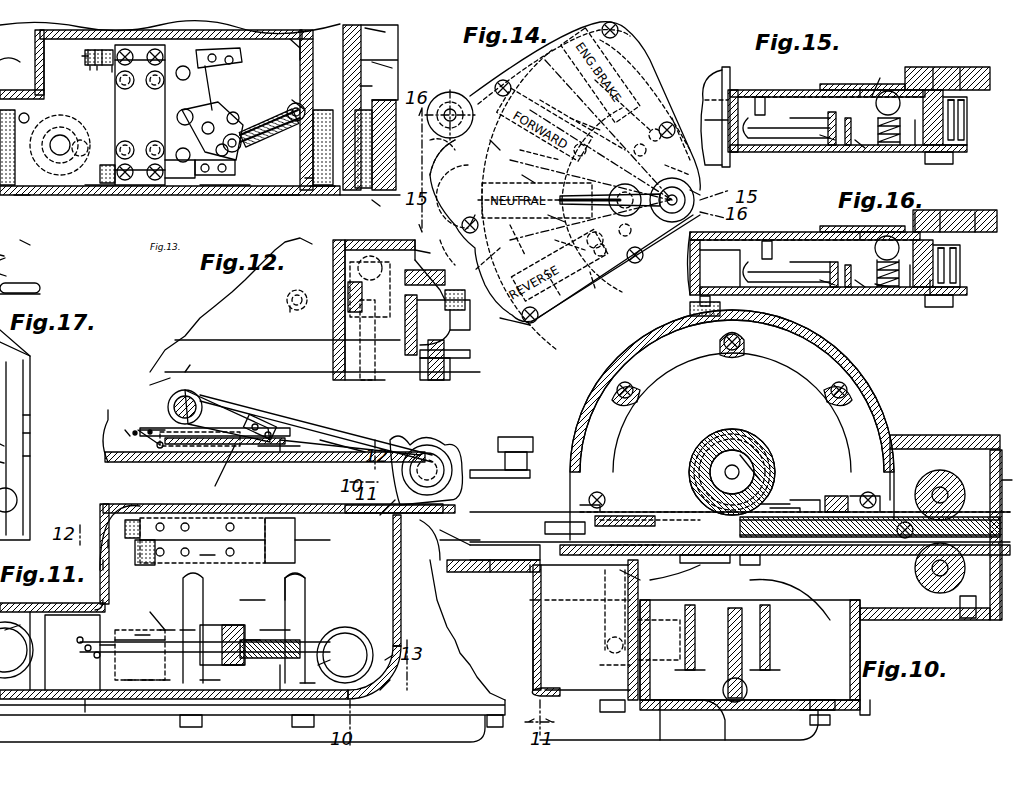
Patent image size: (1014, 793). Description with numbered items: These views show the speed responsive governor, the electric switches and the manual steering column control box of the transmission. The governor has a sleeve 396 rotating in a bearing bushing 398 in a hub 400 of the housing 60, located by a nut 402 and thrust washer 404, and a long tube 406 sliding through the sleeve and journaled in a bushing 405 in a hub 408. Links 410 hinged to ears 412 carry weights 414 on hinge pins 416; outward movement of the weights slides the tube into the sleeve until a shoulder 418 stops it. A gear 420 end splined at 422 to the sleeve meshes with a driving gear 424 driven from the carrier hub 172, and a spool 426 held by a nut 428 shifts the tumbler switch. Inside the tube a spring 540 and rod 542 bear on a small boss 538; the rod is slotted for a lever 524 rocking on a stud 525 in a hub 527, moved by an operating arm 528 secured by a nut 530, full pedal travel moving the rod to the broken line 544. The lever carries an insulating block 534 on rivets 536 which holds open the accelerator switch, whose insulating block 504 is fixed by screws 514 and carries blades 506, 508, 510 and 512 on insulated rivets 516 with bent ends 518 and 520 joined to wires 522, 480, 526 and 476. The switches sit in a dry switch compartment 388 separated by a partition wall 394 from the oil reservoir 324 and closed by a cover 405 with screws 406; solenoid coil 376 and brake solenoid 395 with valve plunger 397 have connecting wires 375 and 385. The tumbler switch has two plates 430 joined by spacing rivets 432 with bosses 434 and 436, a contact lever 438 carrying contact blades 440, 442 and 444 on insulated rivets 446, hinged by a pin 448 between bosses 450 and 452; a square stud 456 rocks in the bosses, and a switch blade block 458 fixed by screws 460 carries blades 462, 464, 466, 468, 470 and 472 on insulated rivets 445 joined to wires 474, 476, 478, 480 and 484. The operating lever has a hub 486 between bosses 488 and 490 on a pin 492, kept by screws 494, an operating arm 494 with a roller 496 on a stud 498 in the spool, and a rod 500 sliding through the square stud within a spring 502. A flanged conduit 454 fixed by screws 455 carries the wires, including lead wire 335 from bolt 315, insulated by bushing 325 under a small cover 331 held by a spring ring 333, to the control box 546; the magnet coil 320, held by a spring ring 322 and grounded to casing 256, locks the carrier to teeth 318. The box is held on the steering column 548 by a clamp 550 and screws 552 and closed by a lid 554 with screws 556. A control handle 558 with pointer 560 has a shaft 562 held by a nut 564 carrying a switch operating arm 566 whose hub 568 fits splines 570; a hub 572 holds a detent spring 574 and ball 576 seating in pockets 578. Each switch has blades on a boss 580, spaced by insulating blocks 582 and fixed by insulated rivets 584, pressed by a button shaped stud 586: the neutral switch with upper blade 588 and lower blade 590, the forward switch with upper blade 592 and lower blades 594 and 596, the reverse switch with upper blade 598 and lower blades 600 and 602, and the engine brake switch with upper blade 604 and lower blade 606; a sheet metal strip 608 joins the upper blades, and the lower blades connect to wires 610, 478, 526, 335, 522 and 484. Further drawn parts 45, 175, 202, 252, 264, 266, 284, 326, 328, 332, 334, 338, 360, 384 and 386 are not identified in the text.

In FIG. 10, the shaft 45 is at (775, 470).
In FIG. 10, the housing wall 60 is at (880, 405).
In FIG. 10, the hub 172 is at (730, 435).
In FIG. 10, the shaft bore 175 is at (748, 450).
In FIG. 10, the housing flange 202 is at (860, 366).
In FIG. 12, the bracket 252 is at (430, 285).
In FIG. 14, the plate edge 256 is at (530, 325).
In FIG. 10, the bearing 264 is at (745, 578).
In FIG. 10, the bearing race 266 is at (745, 565).
In FIG. 10, the hub ring 284 is at (712, 445).
In FIG. 12, the clamp 315 is at (448, 362).
In FIG. 12, the bushing 318 is at (455, 305).
In FIG. 12, the cap 320 is at (447, 295).
In FIG. 12, the link 322 is at (460, 312).
In FIG. 10, the housing wall 324 is at (830, 655).
In FIG. 12, the plate 325 is at (470, 345).
In FIG. 10, the flange 326 is at (835, 712).
In FIG. 10, the bolt 328 is at (838, 725).
In FIG. 12, the boss 331 is at (430, 460).
In FIG. 10, the bottom wall 332 is at (735, 705).
In FIG. 12, the bore 333 is at (425, 445).
In FIG. 13, the housing 334 is at (385, 30).
In FIG. 10, the housing 334 is at (770, 635).
In FIG. 12, the pin 335 is at (385, 400).
In FIG. 14, the pin 335 is at (558, 240).
In FIG. 10, the pin 338 is at (745, 680).
In FIG. 13, the casing 360 is at (17, 57).
In FIG. 13, the pin 375 is at (30, 112).
In FIG. 11, the wall 376 is at (20, 619).
In FIG. 13, the wall 384 is at (20, 195).
In FIG. 13, the bore 385 is at (312, 182).
In FIG. 11, the bore 385 is at (335, 669).
In FIG. 13, the wall 386 is at (378, 81).
In FIG. 13, the housing 388 is at (278, 186).
In FIG. 12, the housing 388 is at (150, 385).
In FIG. 11, the housing 388 is at (394, 676).
In FIG. 10, the housing 388 is at (575, 693).
In FIG. 13, the wall 394 is at (306, 41).
In FIG. 10, the wall 394 is at (659, 640).
In FIG. 13, the wall 395 is at (320, 195).
In FIG. 11, the wall 395 is at (385, 670).
In FIG. 10, the wall 395 is at (540, 668).
In FIG. 10, the spacer 396 is at (860, 495).
In FIG. 13, the wall 397 is at (392, 68).
In FIG. 10, the washer 398 is at (835, 512).
In FIG. 10, the collar 400 is at (822, 512).
In FIG. 10, the sleeve 402 is at (790, 512).
In FIG. 10, the ring 404 is at (808, 512).
In FIG. 13, the cover 405 is at (225, 190).
In FIG. 12, the cover 405 is at (201, 361).
In FIG. 10, the cover 405 is at (665, 512).
In FIG. 13, the bolt 406 is at (380, 208).
In FIG. 10, the bolt 406 is at (883, 560).
In FIG. 10, the shaft 408 is at (672, 512).
In FIG. 10, the gear 410 is at (940, 478).
In FIG. 10, the housing 412 is at (920, 480).
In FIG. 17, the flange 414 is at (18, 500).
In FIG. 10, the flange 414 is at (935, 590).
In FIG. 10, the bolt 416 is at (960, 605).
In FIG. 10, the gear 418 is at (930, 570).
In FIG. 10, the bearing 420 is at (715, 570).
In FIG. 10, the shaft 422 is at (800, 520).
In FIG. 10, the hub 424 is at (768, 460).
In FIG. 12, the bracket 426 is at (340, 308).
In FIG. 10, the bracket 426 is at (630, 515).
In FIG. 10, the bolt 428 is at (605, 510).
In FIG. 13, the link 430 is at (229, 126).
In FIG. 11, the link 430 is at (245, 625).
In FIG. 13, the pin 432 is at (242, 128).
In FIG. 11, the pin 432 is at (255, 640).
In FIG. 13, the hole 434 is at (182, 114).
In FIG. 11, the hole 434 is at (235, 625).
In FIG. 13, the pin 436 is at (233, 116).
In FIG. 11, the pin 436 is at (275, 630).
In FIG. 13, the arm 438 is at (210, 80).
In FIG. 11, the arm 438 is at (230, 670).
In FIG. 13, the plate 440 is at (230, 178).
In FIG. 11, the plate 440 is at (210, 680).
In FIG. 13, the plate 442 is at (230, 55).
In FIG. 13, the screw 444 is at (215, 58).
In FIG. 11, the screw 444 is at (250, 600).
In FIG. 13, the bolt 445 is at (127, 190).
In FIG. 13, the screw 446 is at (229, 62).
In FIG. 13, the hole 448 is at (182, 128).
In FIG. 11, the hole 448 is at (205, 555).
In FIG. 11, the block 450 is at (205, 630).
In FIG. 11, the bolt 452 is at (190, 725).
In FIG. 13, the gear 454 is at (70, 144).
In FIG. 14, the gear 454 is at (445, 105).
In FIG. 10, the gear 454 is at (700, 318).
In FIG. 13, the gear 455 is at (70, 158).
In FIG. 11, the gear 455 is at (60, 712).
In FIG. 13, the pin 456 is at (235, 145).
In FIG. 11, the pin 456 is at (240, 660).
In FIG. 13, the bolt 458 is at (135, 185).
In FIG. 13, the plate 460 is at (140, 115).
In FIG. 13, the coil 462 is at (110, 185).
In FIG. 11, the coil 462 is at (165, 680).
In FIG. 13, the rod 464 is at (85, 190).
In FIG. 17, the rod 464 is at (12, 461).
In FIG. 11, the rod 464 is at (145, 680).
In FIG. 13, the coil 466 is at (110, 50).
In FIG. 11, the coil 466 is at (142, 628).
In FIG. 13, the wire 468 is at (104, 50).
In FIG. 11, the wire 468 is at (114, 625).
In FIG. 13, the wire 470 is at (96, 50).
In FIG. 11, the wire 470 is at (160, 635).
In FIG. 13, the wire 472 is at (90, 50).
In FIG. 11, the wire 472 is at (140, 635).
In FIG. 13, the nut 474 is at (108, 150).
In FIG. 17, the nut 474 is at (12, 444).
In FIG. 11, the nut 474 is at (85, 648).
In FIG. 13, the nut 476 is at (112, 135).
In FIG. 17, the nut 476 is at (30, 435).
In FIG. 11, the nut 476 is at (105, 665).
In FIG. 13, the wire 478 is at (112, 70).
In FIG. 17, the wire 478 is at (30, 415).
In FIG. 11, the wire 478 is at (90, 712).
In FIG. 14, the wire 478 is at (684, 132).
In FIG. 16, the wire 478 is at (858, 295).
In FIG. 13, the wire 480 is at (97, 68).
In FIG. 17, the wire 480 is at (30, 456).
In FIG. 12, the wire 480 is at (150, 430).
In FIG. 11, the wire 480 is at (182, 632).
In FIG. 13, the terminal 484 is at (88, 56).
In FIG. 11, the terminal 484 is at (78, 638).
In FIG. 14, the terminal 484 is at (670, 120).
In FIG. 13, the bolt 486 is at (309, 52).
In FIG. 11, the bolt 486 is at (290, 672).
In FIG. 10, the bolt 486 is at (610, 660).
In FIG. 12, the post 488 is at (290, 310).
In FIG. 11, the post 488 is at (290, 600).
In FIG. 11, the bolt 490 is at (295, 725).
In FIG. 13, the post 492 is at (298, 105).
In FIG. 12, the post 492 is at (292, 300).
In FIG. 11, the post 492 is at (298, 588).
In FIG. 10, the post 492 is at (605, 595).
In FIG. 12, the post 494 is at (350, 268).
In FIG. 11, the post 494 is at (310, 640).
In FIG. 10, the post 494 is at (615, 578).
In FIG. 12, the bracket 496 is at (430, 253).
In FIG. 10, the bracket 496 is at (625, 560).
In FIG. 14, the tab 498 is at (440, 245).
In FIG. 10, the tab 498 is at (626, 563).
In FIG. 13, the spring 500 is at (269, 130).
In FIG. 11, the spring 500 is at (345, 654).
In FIG. 10, the spring 500 is at (605, 645).
In FIG. 13, the nut 502 is at (300, 118).
In FIG. 11, the nut 502 is at (345, 655).
In FIG. 12, the lever 504 is at (205, 445).
In FIG. 12, the pivot 506 is at (160, 445).
In FIG. 11, the pivot 506 is at (141, 527).
In FIG. 12, the pin 508 is at (158, 448).
In FIG. 11, the pin 508 is at (165, 632).
In FIG. 12, the pin 510 is at (148, 440).
In FIG. 12, the pin 512 is at (135, 435).
In FIG. 12, the arm 514 is at (220, 472).
In FIG. 12, the lever 516 is at (175, 433).
In FIG. 11, the lever 516 is at (202, 540).
In FIG. 10, the lever 516 is at (470, 560).
In FIG. 12, the pin 518 is at (285, 455).
In FIG. 12, the arm 520 is at (265, 450).
In FIG. 12, the lever 522 is at (200, 398).
In FIG. 11, the lever 522 is at (190, 555).
In FIG. 14, the lever 522 is at (615, 268).
In FIG. 12, the rod 524 is at (290, 440).
In FIG. 11, the rod 524 is at (312, 550).
In FIG. 10, the rod 524 is at (490, 542).
In FIG. 12, the rod 525 is at (316, 428).
In FIG. 10, the rod 525 is at (520, 465).
In FIG. 17, the shift rod 526 is at (15, 334).
In FIG. 12, the shift rod 526 is at (130, 435).
In FIG. 11, the shift rod 526 is at (105, 565).
In FIG. 14, the shift rod 526 is at (600, 200).
In FIG. 12, the link 527 is at (200, 405).
In FIG. 10, the link 527 is at (520, 522).
In FIG. 10, the nut 528 is at (525, 472).
In FIG. 10, the bolt head 530 is at (520, 445).
In FIG. 12, the pin 534 is at (268, 428).
In FIG. 11, the pin 534 is at (262, 560).
In FIG. 12, the clip 536 is at (270, 440).
In FIG. 12, the arm 538 is at (360, 455).
In FIG. 10, the arm 538 is at (445, 550).
In FIG. 10, the bearing 540 is at (720, 555).
In FIG. 10, the nut 542 is at (560, 540).
In FIG. 12, the rod 544 is at (355, 353).
In FIG. 14, the bolt 546 is at (540, 75).
In FIG. 15, the bolt 546 is at (714, 110).
In FIG. 10, the bolt 546 is at (690, 313).
In FIG. 14, the bolt 548 is at (462, 222).
In FIG. 15, the bolt 548 is at (713, 83).
In FIG. 14, the plate edge 550 is at (428, 163).
In FIG. 14, the slot 552 is at (445, 140).
In FIG. 14, the plate 554 is at (505, 85).
In FIG. 15, the plate 554 is at (745, 90).
In FIG. 16, the plate 554 is at (800, 232).
In FIG. 14, the bolt 556 is at (620, 30).
In FIG. 17, the arm 558 is at (20, 294).
In FIG. 14, the arm 558 is at (710, 182).
In FIG. 15, the arm 558 is at (975, 67).
In FIG. 16, the arm 558 is at (985, 210).
In FIG. 17, the lever 560 is at (40, 282).
In FIG. 14, the lever 560 is at (548, 221).
In FIG. 15, the lever 560 is at (860, 88).
In FIG. 16, the lever 560 is at (920, 225).
In FIG. 15, the arm 562 is at (933, 70).
In FIG. 16, the arm 562 is at (945, 212).
In FIG. 15, the nut 564 is at (935, 162).
In FIG. 16, the nut 564 is at (950, 307).
In FIG. 14, the plate 566 is at (510, 240).
In FIG. 15, the plate 566 is at (870, 79).
In FIG. 16, the plate 566 is at (860, 232).
In FIG. 15, the pin 568 is at (962, 105).
In FIG. 16, the pin 568 is at (958, 250).
In FIG. 15, the pin 570 is at (965, 115).
In FIG. 16, the pin 570 is at (958, 262).
In FIG. 14, the pivot 572 is at (672, 190).
In FIG. 15, the pivot 572 is at (918, 145).
In FIG. 16, the pivot 572 is at (935, 295).
In FIG. 15, the spring 574 is at (900, 145).
In FIG. 16, the spring 574 is at (905, 295).
In FIG. 15, the ball 576 is at (895, 96).
In FIG. 16, the ball 576 is at (893, 242).
In FIG. 14, the bolt 578 is at (637, 262).
In FIG. 15, the bolt 578 is at (893, 98).
In FIG. 15, the pin 580 is at (842, 148).
In FIG. 16, the pin 580 is at (838, 295).
In FIG. 15, the pin 582 is at (828, 140).
In FIG. 16, the pin 582 is at (840, 295).
In FIG. 14, the pin 584 is at (607, 287).
In FIG. 16, the pin 584 is at (882, 295).
In FIG. 14, the screw 586 is at (508, 180).
In FIG. 15, the screw 586 is at (760, 100).
In FIG. 16, the screw 586 is at (770, 250).
In FIG. 17, the bar 588 is at (0, 258).
In FIG. 14, the bar 588 is at (491, 221).
In FIG. 15, the bar 588 is at (800, 118).
In FIG. 14, the spring 590 is at (522, 171).
In FIG. 15, the spring 590 is at (795, 140).
In FIG. 17, the bar 592 is at (0, 262).
In FIG. 14, the bar 592 is at (485, 138).
In FIG. 16, the bar 592 is at (810, 255).
In FIG. 14, the slot 594 is at (560, 102).
In FIG. 16, the slot 594 is at (790, 285).
In FIG. 14, the slot 596 is at (530, 148).
In FIG. 17, the slot 598 is at (5, 275).
In FIG. 14, the slot 598 is at (564, 290).
In FIG. 14, the slot 600 is at (495, 257).
In FIG. 14, the bolt 602 is at (543, 317).
In FIG. 17, the slot 604 is at (15, 236).
In FIG. 14, the slot 604 is at (576, 108).
In FIG. 14, the slot 606 is at (645, 91).
In FIG. 14, the pin 608 is at (607, 105).
In FIG. 15, the pin 608 is at (834, 112).
In FIG. 16, the pin 608 is at (838, 262).
In FIG. 14, the pin 610 is at (676, 160).
In FIG. 15, the pin 610 is at (858, 148).